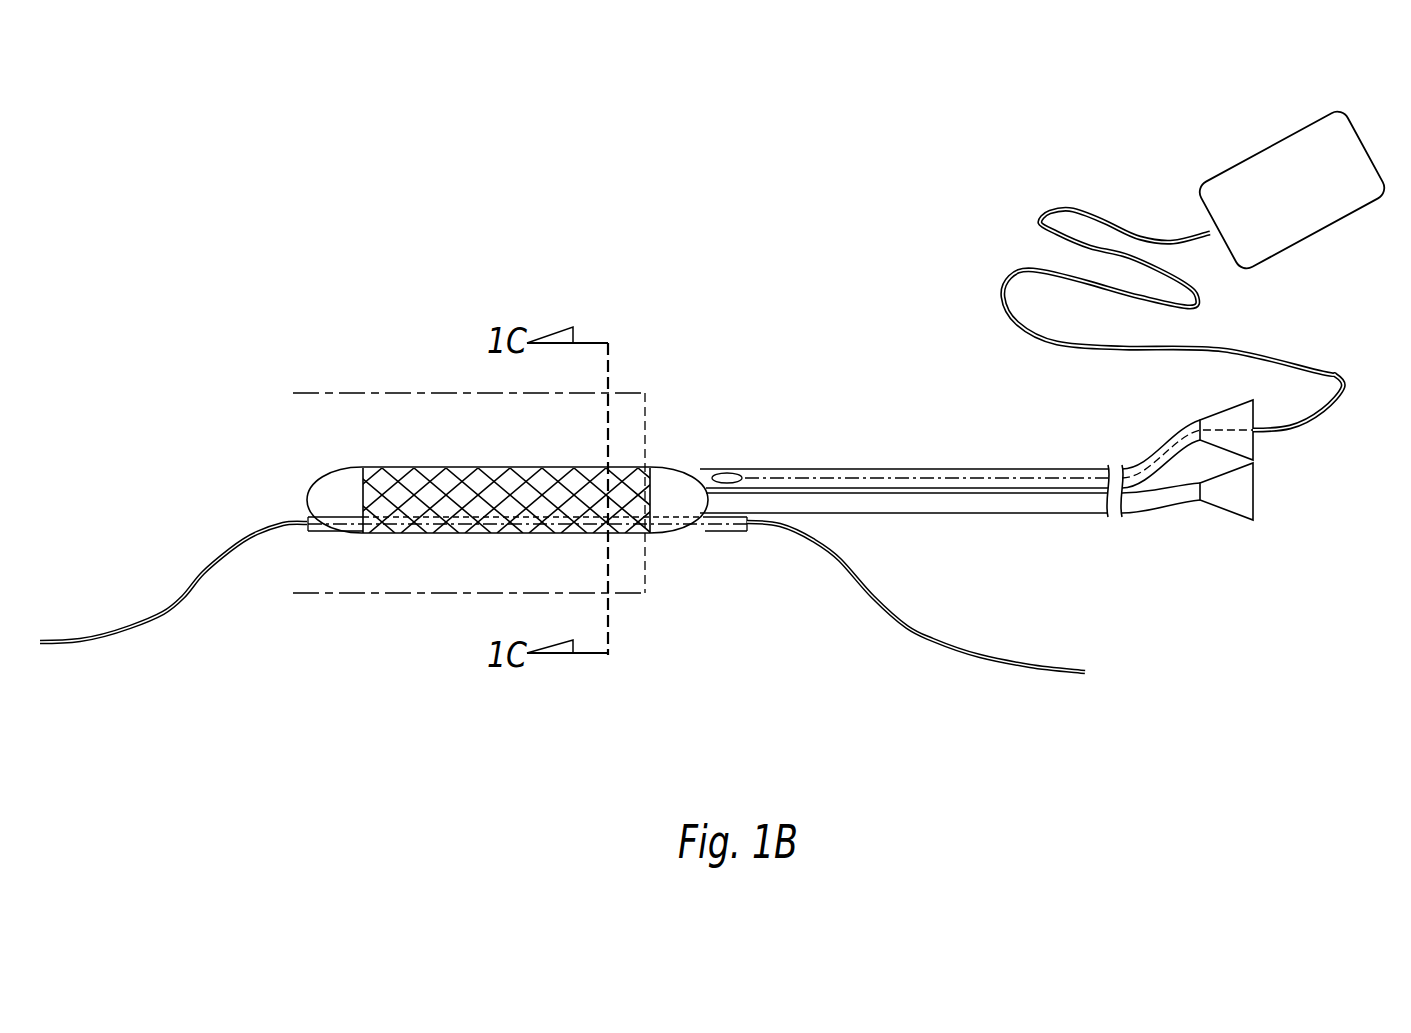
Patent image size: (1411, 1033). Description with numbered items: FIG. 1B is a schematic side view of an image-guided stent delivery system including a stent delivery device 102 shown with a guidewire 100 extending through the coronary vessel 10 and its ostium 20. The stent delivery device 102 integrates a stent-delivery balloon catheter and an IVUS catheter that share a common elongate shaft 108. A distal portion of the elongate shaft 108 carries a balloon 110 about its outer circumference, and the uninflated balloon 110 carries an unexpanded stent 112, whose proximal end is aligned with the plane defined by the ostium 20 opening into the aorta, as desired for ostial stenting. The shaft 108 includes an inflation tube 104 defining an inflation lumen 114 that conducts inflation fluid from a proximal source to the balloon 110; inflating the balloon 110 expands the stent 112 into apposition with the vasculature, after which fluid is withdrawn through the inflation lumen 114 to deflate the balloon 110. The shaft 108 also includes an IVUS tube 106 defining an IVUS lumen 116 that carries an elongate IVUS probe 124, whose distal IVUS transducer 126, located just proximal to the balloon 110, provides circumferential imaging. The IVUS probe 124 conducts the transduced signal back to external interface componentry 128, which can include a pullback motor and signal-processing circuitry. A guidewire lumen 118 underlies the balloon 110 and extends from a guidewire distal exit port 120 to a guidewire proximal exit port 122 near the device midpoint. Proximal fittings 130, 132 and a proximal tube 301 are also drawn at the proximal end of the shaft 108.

The coronary vessel 10 is at (437, 393).
The ostium 20 is at (645, 594).
The guidewire 100 is at (182, 600).
The stent delivery device 102 is at (228, 82).
The inflation tube 104 is at (920, 515).
The IVUS tube 106 is at (918, 469).
The elongate shaft 108 is at (838, 442).
The balloon 110 is at (690, 466).
The stent 112 is at (505, 468).
The inflation lumen 114 is at (1007, 505).
The IVUS lumen 116 is at (998, 482).
The guidewire lumen 118 is at (718, 533).
The guidewire distal exit port 120 is at (307, 530).
The guidewire proximal exit port 122 is at (750, 524).
The IVUS probe 124 is at (1347, 387).
The IVUS transducer 126 is at (732, 475).
The external interface componentry 128 is at (1268, 140).
The lower hub 130 is at (1280, 497).
The upper hub 132 is at (1292, 448).
The guidewire tube 301 is at (1162, 513).